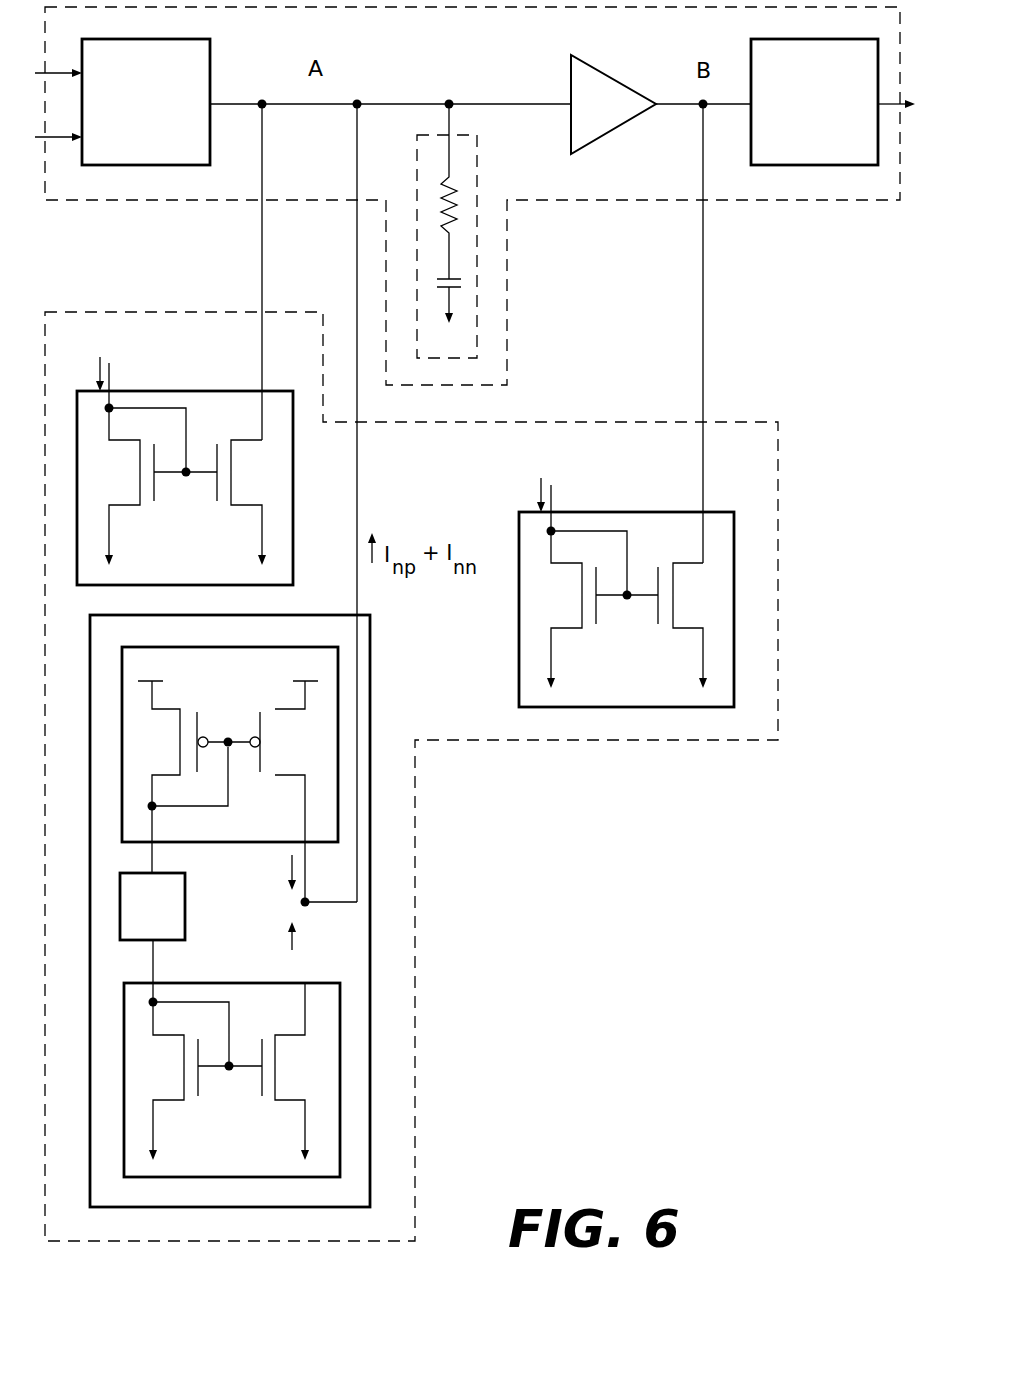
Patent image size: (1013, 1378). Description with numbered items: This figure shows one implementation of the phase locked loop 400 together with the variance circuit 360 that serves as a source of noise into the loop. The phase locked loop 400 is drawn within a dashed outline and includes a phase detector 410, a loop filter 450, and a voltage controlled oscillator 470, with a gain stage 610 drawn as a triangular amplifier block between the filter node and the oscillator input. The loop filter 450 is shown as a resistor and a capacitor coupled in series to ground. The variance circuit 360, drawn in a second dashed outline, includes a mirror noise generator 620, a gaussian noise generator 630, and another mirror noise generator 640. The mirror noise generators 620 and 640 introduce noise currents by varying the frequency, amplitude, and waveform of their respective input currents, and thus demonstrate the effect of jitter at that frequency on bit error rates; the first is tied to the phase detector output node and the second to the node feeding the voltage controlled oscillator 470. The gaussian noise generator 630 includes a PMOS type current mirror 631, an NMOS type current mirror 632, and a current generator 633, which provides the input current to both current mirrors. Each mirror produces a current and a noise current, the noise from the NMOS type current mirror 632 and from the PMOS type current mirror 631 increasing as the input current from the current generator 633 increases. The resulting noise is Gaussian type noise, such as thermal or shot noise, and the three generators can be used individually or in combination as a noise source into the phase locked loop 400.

The variance circuit 360 is at (626, 750).
The phase locked loop 400 is at (762, 200).
The phase detector 410 is at (192, 39).
The loop filter 450 is at (478, 213).
The voltage controlled oscillator 470 is at (862, 39).
The amplifier with gain Kc 610 is at (645, 97).
The mirror noise generator 620 is at (240, 391).
The gaussian noise generator 630 is at (380, 678).
The PMOS type current mirror 631 is at (285, 647).
The NMOS type current mirror 632 is at (300, 1178).
The current generator 633 is at (162, 940).
The mirror noise generator 640 is at (672, 512).